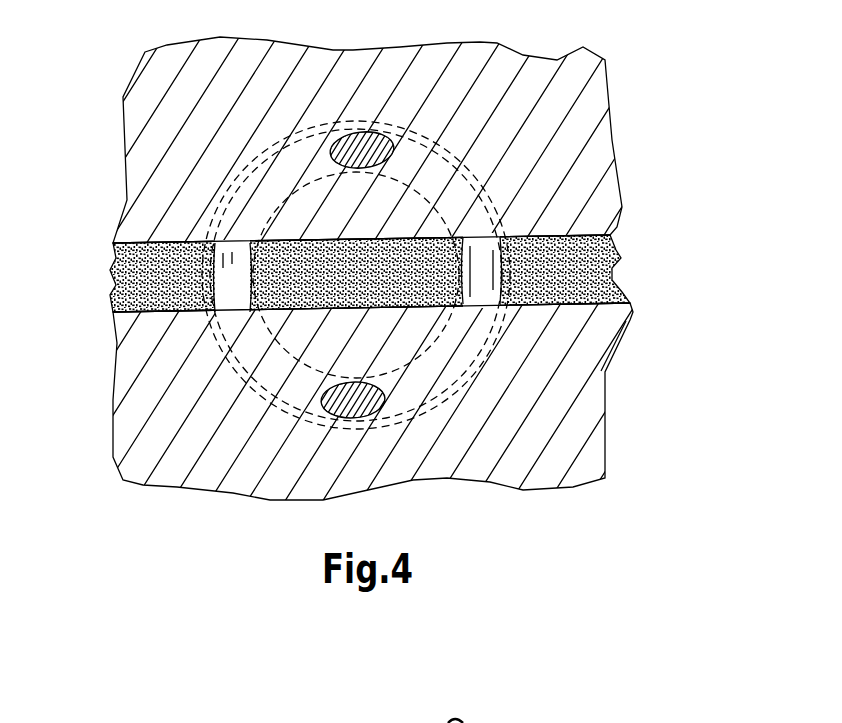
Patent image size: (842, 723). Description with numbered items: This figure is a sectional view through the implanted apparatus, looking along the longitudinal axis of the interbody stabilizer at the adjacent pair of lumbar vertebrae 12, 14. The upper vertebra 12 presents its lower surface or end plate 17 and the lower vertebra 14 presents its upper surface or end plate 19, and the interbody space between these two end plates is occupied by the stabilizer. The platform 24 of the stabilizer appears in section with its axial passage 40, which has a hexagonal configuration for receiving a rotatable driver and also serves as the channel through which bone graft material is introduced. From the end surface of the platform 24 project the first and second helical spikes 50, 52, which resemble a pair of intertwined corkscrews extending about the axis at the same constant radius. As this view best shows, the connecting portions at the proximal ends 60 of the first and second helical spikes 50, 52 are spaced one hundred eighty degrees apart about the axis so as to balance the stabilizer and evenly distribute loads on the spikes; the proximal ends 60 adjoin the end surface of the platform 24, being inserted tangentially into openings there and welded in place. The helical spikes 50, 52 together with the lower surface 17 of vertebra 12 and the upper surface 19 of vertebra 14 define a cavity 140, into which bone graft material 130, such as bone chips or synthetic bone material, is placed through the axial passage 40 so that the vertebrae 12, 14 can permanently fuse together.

The lumbar vertebra 12 is at (620, 128).
The lumbar vertebra 14 is at (627, 338).
The lower surface 17 is at (117, 251).
The upper surface 19 is at (115, 315).
The platform 24 is at (290, 345).
The axial passage 40 is at (476, 240).
The first helical spike 50 is at (233, 290).
The second helical spike 52 is at (365, 140).
The proximal end 60 is at (482, 271).
The bone graft material 130 is at (371, 243).
The cavity 140 is at (288, 250).